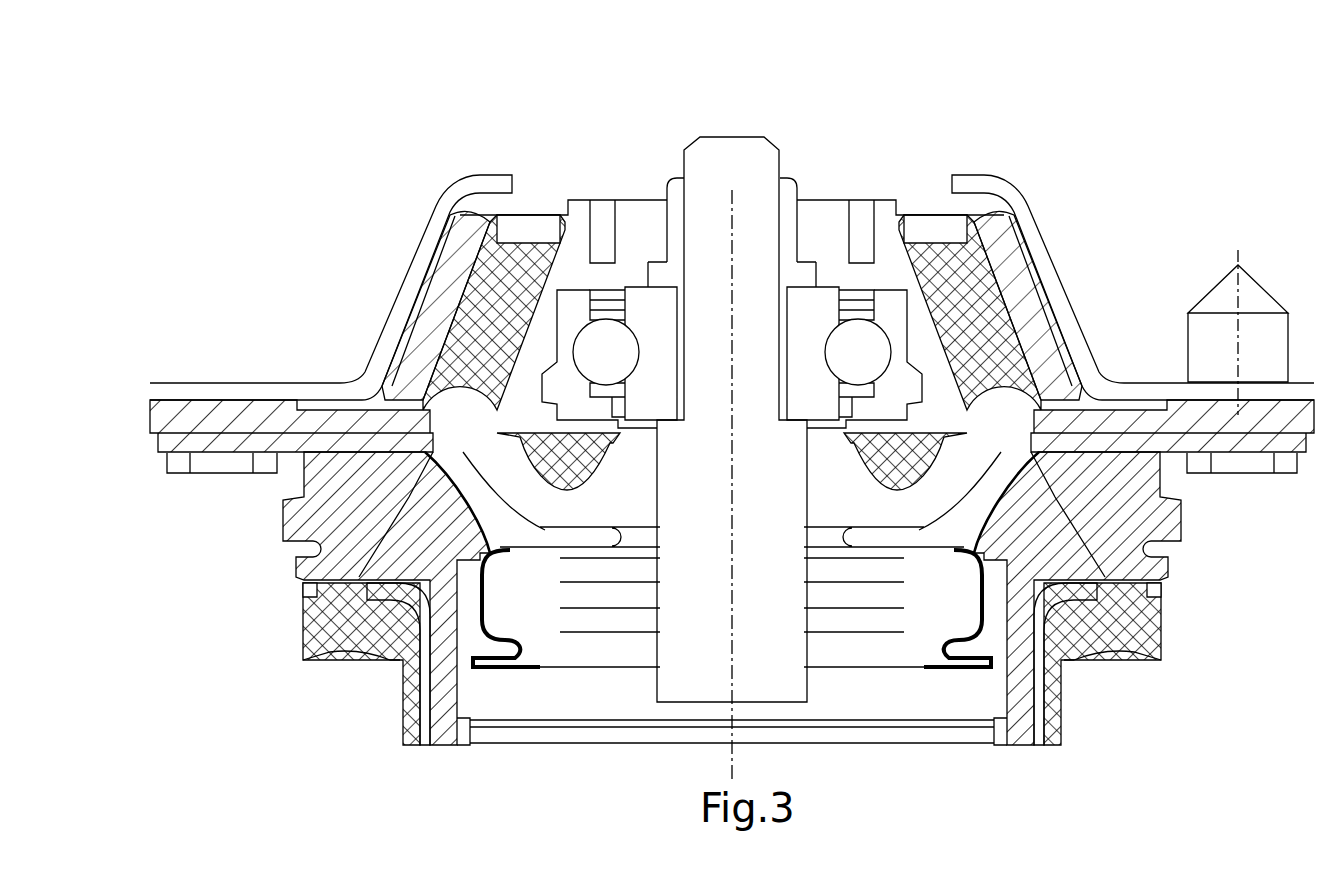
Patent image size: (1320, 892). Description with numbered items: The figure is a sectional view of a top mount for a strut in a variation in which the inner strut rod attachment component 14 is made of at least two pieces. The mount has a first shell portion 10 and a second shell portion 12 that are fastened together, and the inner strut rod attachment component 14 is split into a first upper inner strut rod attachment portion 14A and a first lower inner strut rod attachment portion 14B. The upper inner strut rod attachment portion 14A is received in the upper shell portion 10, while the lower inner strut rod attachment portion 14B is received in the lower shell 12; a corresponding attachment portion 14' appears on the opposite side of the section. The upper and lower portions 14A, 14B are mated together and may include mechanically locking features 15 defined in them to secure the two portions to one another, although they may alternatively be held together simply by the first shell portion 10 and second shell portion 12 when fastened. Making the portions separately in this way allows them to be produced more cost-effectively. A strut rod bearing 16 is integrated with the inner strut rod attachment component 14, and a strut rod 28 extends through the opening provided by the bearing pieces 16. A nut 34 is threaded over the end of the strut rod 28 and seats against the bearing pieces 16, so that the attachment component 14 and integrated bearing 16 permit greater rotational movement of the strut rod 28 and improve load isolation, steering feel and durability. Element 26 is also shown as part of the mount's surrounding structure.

The first shell portion 10 is at (215, 380).
The second shell portion 12 is at (173, 477).
The inner strut rod attachment component 14 is at (563, 281).
The upper housing (second side) 14' is at (900, 287).
The first upper inner strut rod attachment portion 14A is at (540, 340).
The first lower inner strut rod attachment portion 14B is at (618, 440).
The mechanically locking features 15 is at (560, 430).
The strut rod bearing 16 is at (820, 292).
The bracket 26 is at (987, 293).
The strut rod 28 is at (708, 132).
The nut 34 is at (788, 176).